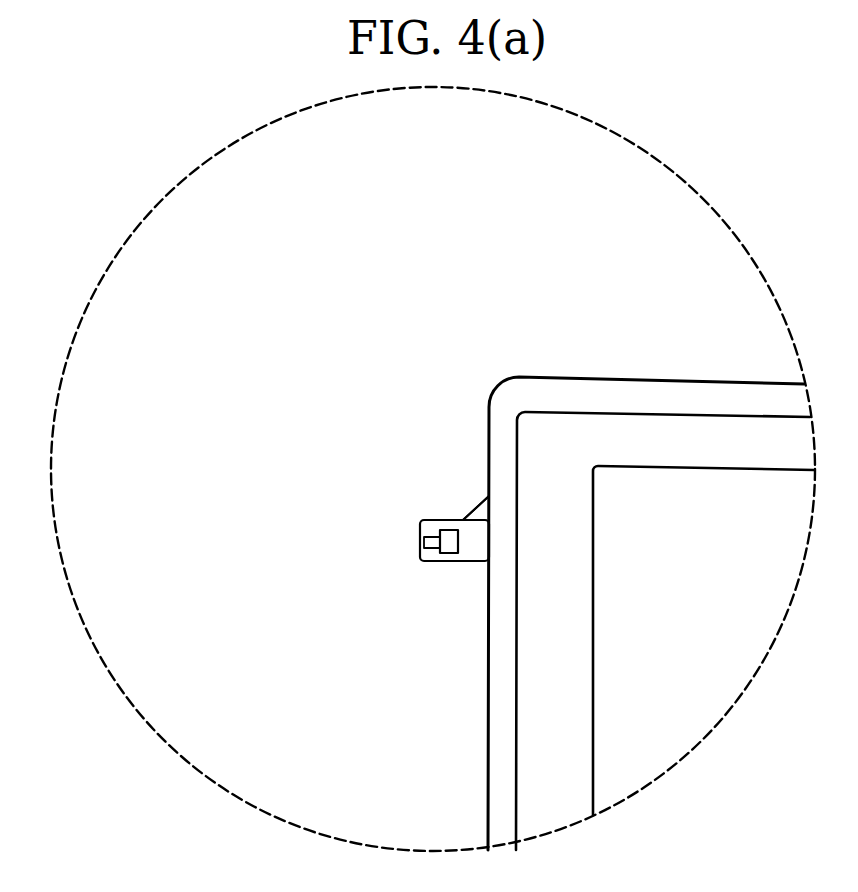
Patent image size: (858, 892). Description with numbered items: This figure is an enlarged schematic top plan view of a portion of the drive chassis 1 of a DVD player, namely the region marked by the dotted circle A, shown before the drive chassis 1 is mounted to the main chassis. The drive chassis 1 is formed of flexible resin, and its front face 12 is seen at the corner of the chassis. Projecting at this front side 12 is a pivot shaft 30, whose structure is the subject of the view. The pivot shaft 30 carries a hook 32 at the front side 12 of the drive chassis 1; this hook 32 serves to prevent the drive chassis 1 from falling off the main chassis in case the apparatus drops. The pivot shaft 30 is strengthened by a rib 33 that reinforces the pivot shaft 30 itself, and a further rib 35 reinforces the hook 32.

The dotted circle A is at (703, 200).
The drive chassis 1 is at (566, 372).
The front face of the drive chassis 12 is at (627, 685).
The pivot shaft 30 is at (427, 520).
The hook 32 is at (448, 556).
The rib 33 is at (478, 505).
The rib 35 is at (424, 542).